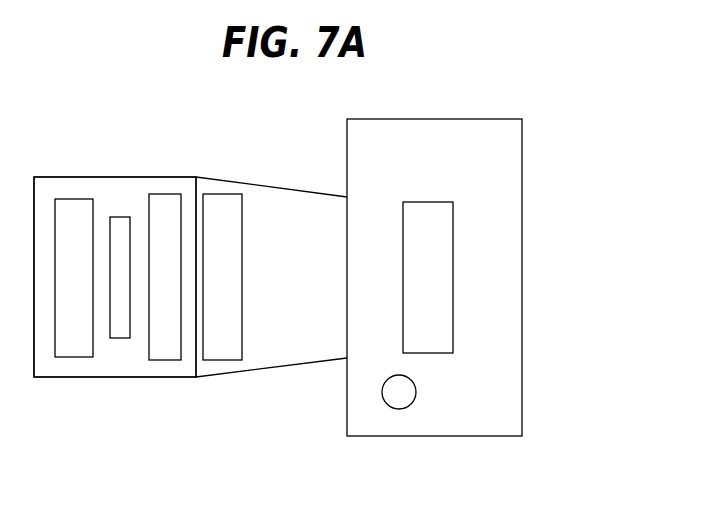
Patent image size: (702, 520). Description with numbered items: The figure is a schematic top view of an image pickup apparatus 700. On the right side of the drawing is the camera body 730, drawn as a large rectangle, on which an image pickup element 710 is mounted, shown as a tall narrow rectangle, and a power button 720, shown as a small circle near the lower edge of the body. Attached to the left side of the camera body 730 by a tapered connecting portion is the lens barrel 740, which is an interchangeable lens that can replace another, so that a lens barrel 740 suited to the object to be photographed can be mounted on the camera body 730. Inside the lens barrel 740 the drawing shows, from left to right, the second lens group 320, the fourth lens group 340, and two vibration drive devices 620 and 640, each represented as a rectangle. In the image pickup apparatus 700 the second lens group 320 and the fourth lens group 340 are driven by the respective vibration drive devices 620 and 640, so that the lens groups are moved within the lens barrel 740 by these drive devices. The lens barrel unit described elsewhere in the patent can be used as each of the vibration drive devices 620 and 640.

The image pickup apparatus 700 is at (331, 108).
The lens barrel 740 is at (125, 183).
The second lens group 320 is at (75, 352).
The fourth lens group 340 is at (120, 333).
The vibration drive device 620 is at (164, 203).
The vibration drive device 640 is at (223, 203).
The camera body 730 is at (463, 427).
The image pickup element 710 is at (443, 277).
The power button 720 is at (402, 402).